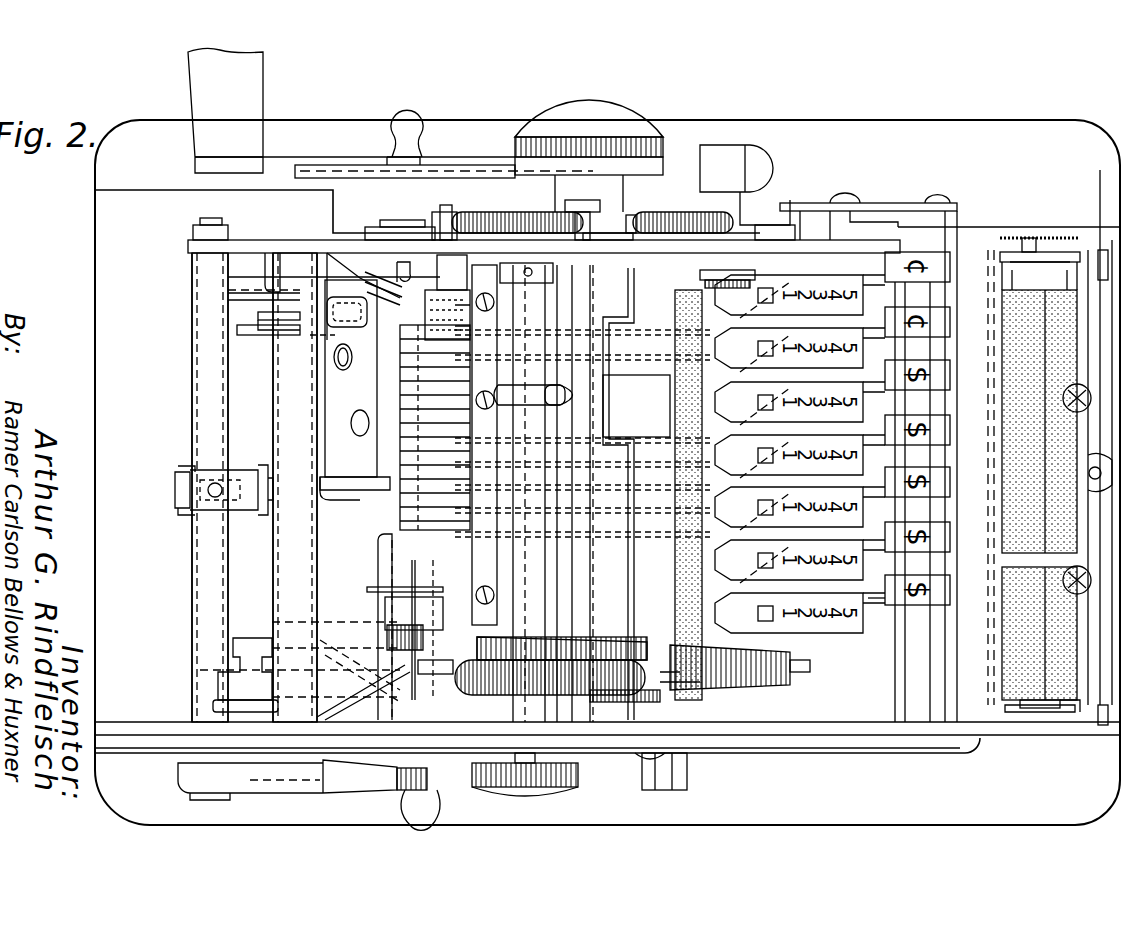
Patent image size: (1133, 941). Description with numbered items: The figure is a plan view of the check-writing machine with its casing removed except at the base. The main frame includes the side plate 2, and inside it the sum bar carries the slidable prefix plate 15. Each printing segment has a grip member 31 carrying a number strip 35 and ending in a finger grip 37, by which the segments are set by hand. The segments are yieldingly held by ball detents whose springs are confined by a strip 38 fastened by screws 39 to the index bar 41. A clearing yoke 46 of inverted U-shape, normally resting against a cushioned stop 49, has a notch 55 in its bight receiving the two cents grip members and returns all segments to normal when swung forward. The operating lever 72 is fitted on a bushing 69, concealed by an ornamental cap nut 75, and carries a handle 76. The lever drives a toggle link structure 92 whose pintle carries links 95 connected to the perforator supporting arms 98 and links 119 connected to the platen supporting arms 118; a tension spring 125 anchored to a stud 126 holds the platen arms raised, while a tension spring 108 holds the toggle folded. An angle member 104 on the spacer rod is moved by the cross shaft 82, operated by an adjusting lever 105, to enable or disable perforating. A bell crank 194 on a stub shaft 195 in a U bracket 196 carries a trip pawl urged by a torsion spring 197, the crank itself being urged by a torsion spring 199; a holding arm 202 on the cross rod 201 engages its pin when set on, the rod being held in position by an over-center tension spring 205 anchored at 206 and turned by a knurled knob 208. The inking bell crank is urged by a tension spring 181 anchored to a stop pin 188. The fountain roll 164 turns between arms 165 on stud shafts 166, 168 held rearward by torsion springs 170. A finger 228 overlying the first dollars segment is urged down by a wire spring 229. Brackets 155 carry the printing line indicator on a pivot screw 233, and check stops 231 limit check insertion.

The side plate 2 is at (400, 242).
The prefix plate 15 is at (672, 786).
The grip member 31 is at (870, 590).
The number strip 35 is at (818, 632).
The finger grip 37 is at (940, 410).
The strip 38 is at (482, 420).
The screws 39 is at (478, 398).
The index bar 41 is at (502, 565).
The clearing yoke 46 is at (628, 563).
The cushioned stop 49 is at (560, 403).
The notch 55 is at (615, 318).
The bushing 69 is at (578, 197).
The operating lever 72 is at (302, 165).
The ornamental cap nut 75 is at (612, 112).
The handle 76 is at (200, 80).
The cross shaft 82 is at (205, 381).
The toggle link structure 92 is at (290, 540).
The links 95 is at (247, 331).
The perforator supporting arms 98 is at (266, 316).
The angle member 104 is at (178, 468).
The adjusting lever 105 is at (330, 770).
The tension spring 108 is at (792, 674).
The platen supporting arms 118 is at (236, 298).
The links 119 is at (242, 280).
The tension spring 125 is at (605, 672).
The stud 126 is at (262, 256).
The brackets 155 is at (900, 203).
The fountain roll 164 is at (1030, 498).
The arms 165 is at (1048, 262).
The stud shaft 166 is at (1042, 708).
The stud shaft 168 is at (1028, 240).
The torsion springs 170 is at (1065, 705).
The tension spring 181 is at (684, 214).
The stop pin 188 is at (762, 213).
The bell crank 194 is at (350, 292).
The stub shaft 195 is at (375, 455).
The U bracket 196 is at (328, 490).
The torsion spring 197 is at (445, 262).
The torsion spring 199 is at (350, 342).
The cross rod 201 is at (535, 375).
The holding arm 202 is at (343, 253).
The tension spring 205 is at (495, 212).
The anchor point 206 is at (440, 212).
The knurled knob 208 is at (548, 790).
The finger 228 is at (380, 565).
The wire spring 229 is at (385, 588).
The check stops 231 is at (757, 150).
The pivot screw 233 is at (843, 195).